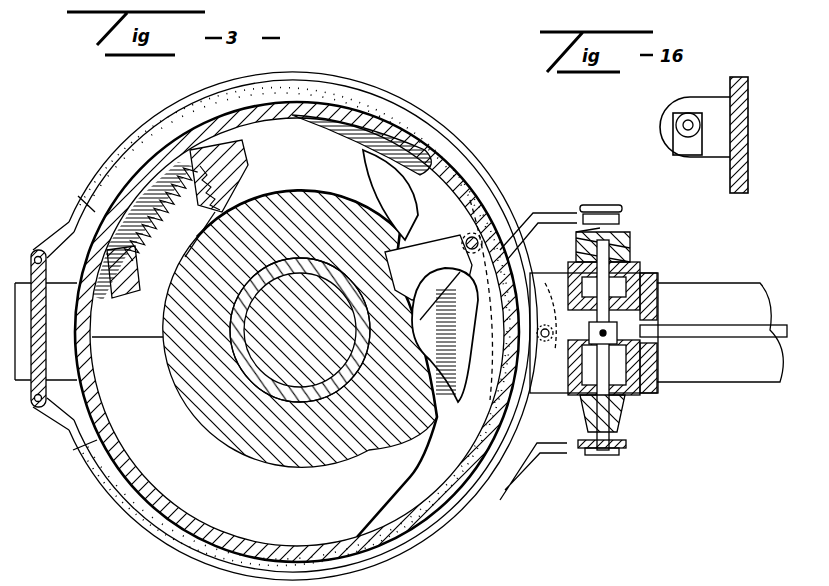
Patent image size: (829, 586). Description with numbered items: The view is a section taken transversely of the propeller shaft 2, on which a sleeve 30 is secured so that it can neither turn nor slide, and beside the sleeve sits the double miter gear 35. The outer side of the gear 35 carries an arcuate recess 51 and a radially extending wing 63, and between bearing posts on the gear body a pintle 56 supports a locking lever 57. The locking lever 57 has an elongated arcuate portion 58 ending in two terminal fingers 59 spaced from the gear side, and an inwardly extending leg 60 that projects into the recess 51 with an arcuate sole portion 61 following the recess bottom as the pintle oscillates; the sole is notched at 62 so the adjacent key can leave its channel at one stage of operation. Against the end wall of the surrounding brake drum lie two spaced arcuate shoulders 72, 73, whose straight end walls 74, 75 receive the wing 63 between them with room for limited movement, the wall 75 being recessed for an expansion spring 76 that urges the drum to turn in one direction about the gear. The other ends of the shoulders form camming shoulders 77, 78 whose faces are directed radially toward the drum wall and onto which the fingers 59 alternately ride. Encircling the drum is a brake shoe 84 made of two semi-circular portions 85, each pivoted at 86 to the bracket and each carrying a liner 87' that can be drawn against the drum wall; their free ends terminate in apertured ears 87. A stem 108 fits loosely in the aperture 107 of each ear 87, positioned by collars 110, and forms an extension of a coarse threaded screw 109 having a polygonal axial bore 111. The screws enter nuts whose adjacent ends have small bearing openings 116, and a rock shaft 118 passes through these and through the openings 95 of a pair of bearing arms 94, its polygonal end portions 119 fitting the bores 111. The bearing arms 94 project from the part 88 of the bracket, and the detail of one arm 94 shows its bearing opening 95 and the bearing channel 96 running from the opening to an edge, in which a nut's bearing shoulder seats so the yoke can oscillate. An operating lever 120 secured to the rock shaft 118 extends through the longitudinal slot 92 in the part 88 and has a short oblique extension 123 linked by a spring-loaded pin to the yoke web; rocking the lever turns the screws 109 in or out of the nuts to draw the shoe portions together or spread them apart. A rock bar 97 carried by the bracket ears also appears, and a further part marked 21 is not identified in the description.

In FIG. 3, the propeller shaft 2 is at (117, 467).
In FIG. 3, the shaft 21 is at (767, 370).
In FIG. 3, the sleeve 30 is at (265, 352).
In FIG. 3, the double miter gear 35 is at (293, 390).
In FIG. 3, the arcuate recess 51 is at (462, 301).
In FIG. 3, the locking lever supporting pintle 56 is at (510, 215).
In FIG. 3, the locking lever 57 is at (378, 202).
In FIG. 3, the elongated arcuate portion 58 is at (455, 197).
In FIG. 3, the terminal fingers 59 is at (378, 153).
In FIG. 3, the inwardly extending leg 60 is at (380, 212).
In FIG. 3, the arcuate sole portion 61 is at (434, 296).
In FIG. 3, the notch 62 is at (325, 188).
In FIG. 3, the radially extending wing 63 is at (130, 283).
In FIG. 3, the arcuate shoulder 72 is at (113, 470).
In FIG. 3, the arcuate shoulder 73 is at (181, 220).
In FIG. 3, the straight end wall 74 is at (143, 340).
In FIG. 3, the straight end wall 75 is at (192, 236).
In FIG. 3, the expansion spring 76 is at (180, 203).
In FIG. 3, the camming shoulder 77 is at (413, 477).
In FIG. 3, the camming shoulder 78 is at (330, 142).
In FIG. 3, the brake shoe 84 is at (147, 114).
In FIG. 3, the semi-circular portion 85 is at (204, 87).
In FIG. 3, the pivot 86 is at (56, 247).
In FIG. 3, the apertured ear 87 is at (590, 321).
In FIG. 3, the liner 87' is at (376, 311).
In FIG. 3, the part of the bracket 88 is at (641, 278).
In FIG. 16, the part of the bracket 88 is at (747, 84).
In FIG. 3, the longitudinal slot 92 is at (655, 327).
In FIG. 16, the longitudinal slot 92 is at (745, 172).
In FIG. 3, the bearing arm 94 is at (650, 318).
In FIG. 16, the bearing arm 94 is at (712, 103).
In FIG. 16, the bearing opening 95 is at (677, 125).
In FIG. 16, the bearing channel 96 is at (672, 148).
In FIG. 3, the rock bar 97 is at (495, 355).
In FIG. 3, the aperture 107 is at (607, 453).
In FIG. 3, the stem 108 is at (597, 447).
In FIG. 3, the coarse threaded screw 109 is at (627, 253).
In FIG. 3, the collars 110 is at (567, 450).
In FIG. 3, the axial bore 111 is at (577, 410).
In FIG. 3, the central bearing opening 116 is at (567, 315).
In FIG. 3, the rock shaft 118 is at (590, 318).
In FIG. 3, the end portions 119 is at (646, 310).
In FIG. 3, the operating lever 120 is at (753, 327).
In FIG. 3, the short oblique extension 123 is at (663, 335).